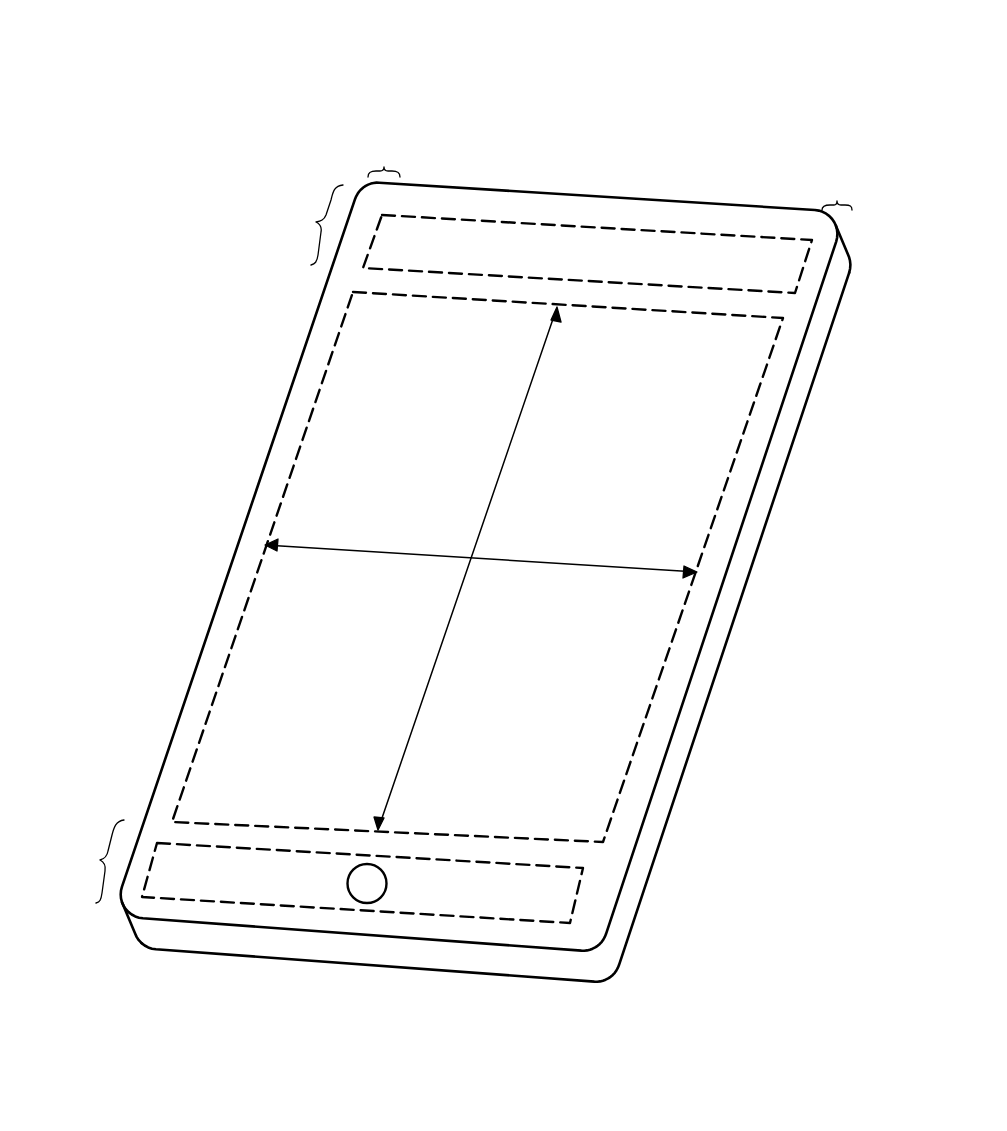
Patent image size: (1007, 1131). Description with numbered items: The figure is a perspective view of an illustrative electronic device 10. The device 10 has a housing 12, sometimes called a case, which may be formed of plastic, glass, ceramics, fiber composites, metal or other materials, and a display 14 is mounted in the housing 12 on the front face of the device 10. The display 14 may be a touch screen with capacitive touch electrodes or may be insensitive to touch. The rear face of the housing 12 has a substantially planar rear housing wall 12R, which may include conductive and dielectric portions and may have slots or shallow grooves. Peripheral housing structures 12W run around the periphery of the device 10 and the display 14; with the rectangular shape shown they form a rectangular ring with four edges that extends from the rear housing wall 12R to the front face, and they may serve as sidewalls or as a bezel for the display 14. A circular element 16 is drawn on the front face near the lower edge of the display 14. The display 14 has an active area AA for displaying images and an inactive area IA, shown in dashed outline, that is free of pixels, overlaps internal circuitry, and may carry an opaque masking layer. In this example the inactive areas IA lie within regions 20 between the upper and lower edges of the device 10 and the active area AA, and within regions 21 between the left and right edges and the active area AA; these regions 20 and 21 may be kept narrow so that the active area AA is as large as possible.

The electronic device 10 is at (792, 65).
The housing 12 is at (783, 435).
The peripheral housing structures 12W is at (854, 238).
The rear housing wall 12R is at (632, 930).
The display 14 is at (623, 340).
The button 16 is at (367, 903).
The regions 20 is at (208, 544).
The regions 21 is at (610, 179).
The inactive area IA is at (494, 210).
The active area AA is at (477, 567).